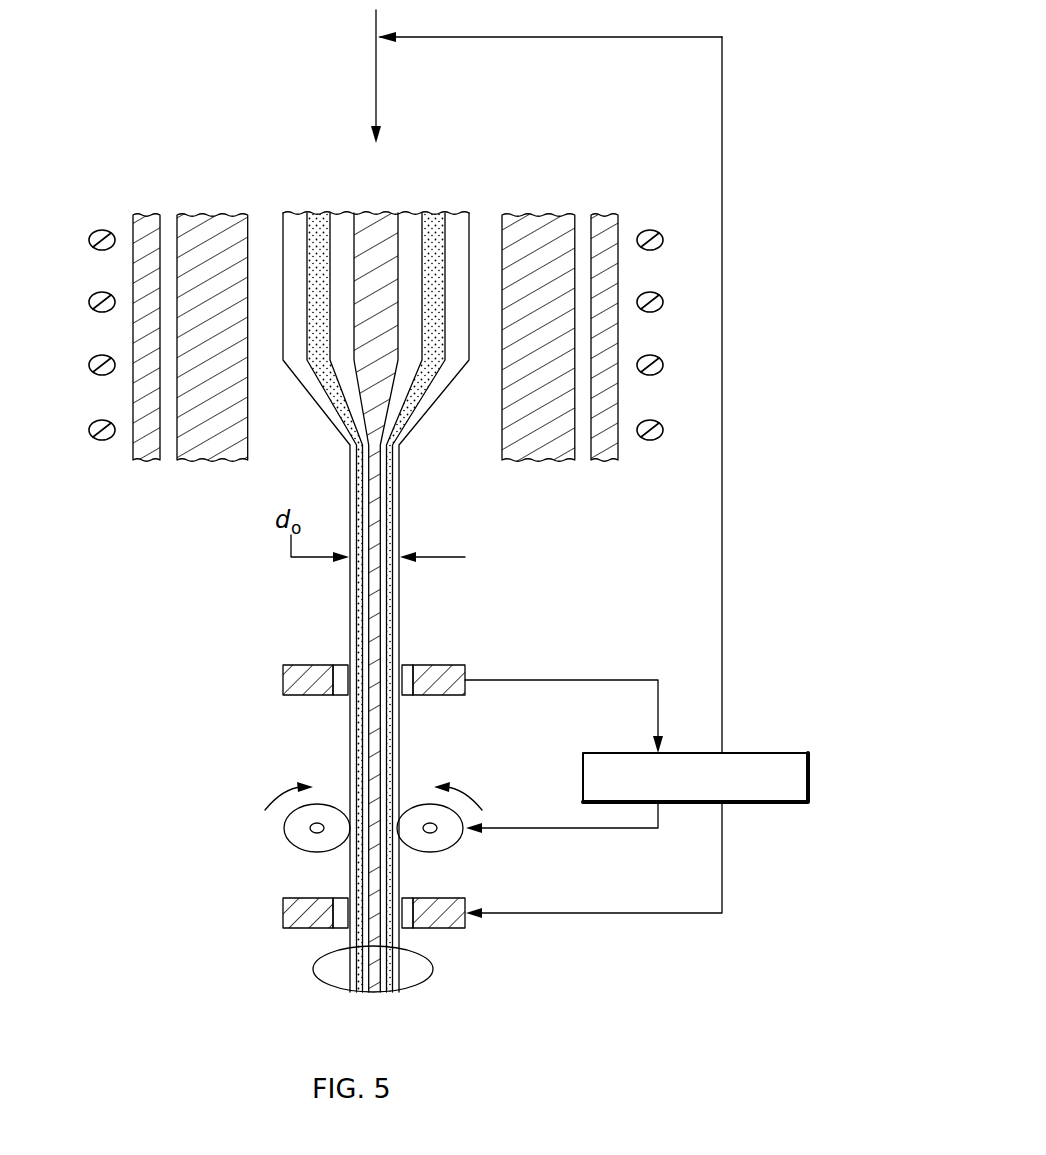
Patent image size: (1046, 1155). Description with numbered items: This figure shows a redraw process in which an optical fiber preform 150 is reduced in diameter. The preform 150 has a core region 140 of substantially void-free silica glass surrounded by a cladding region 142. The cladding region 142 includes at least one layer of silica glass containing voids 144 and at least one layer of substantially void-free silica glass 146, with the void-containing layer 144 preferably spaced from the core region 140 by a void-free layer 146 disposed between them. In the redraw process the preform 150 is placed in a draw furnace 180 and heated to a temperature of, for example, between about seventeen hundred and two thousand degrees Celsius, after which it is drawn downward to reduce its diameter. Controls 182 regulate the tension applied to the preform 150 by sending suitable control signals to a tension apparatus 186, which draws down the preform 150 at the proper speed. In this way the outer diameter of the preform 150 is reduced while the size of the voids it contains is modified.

The core region 140 is at (376, 212).
The cladding region 142 is at (362, 210).
The layer of silica glass containing voids 144 is at (435, 213).
The layer of substantially void-free silica glass 146 is at (410, 213).
The optical fiber preform 150 is at (283, 299).
The draw furnace 180 is at (148, 200).
The controls 182 is at (810, 780).
The tension apparatus 186 is at (238, 840).